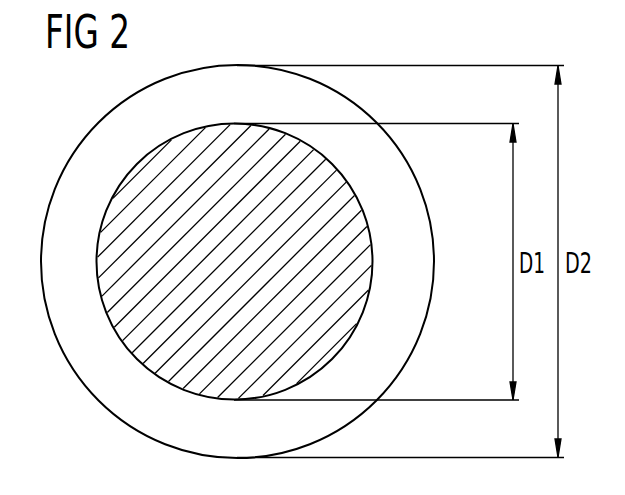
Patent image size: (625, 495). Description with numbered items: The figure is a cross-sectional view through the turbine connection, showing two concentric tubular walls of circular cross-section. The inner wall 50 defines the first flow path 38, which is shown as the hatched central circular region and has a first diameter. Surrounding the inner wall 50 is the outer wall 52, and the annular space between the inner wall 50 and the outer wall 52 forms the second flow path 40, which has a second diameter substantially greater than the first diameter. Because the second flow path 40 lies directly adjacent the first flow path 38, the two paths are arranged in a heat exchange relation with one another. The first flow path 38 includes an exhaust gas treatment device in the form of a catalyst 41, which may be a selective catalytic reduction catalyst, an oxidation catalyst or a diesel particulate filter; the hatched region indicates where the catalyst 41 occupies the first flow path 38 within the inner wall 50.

The first flow path 38 is at (143, 187).
The second flow path 40 is at (413, 210).
The catalyst 41 is at (333, 325).
The inner wall 50 is at (97, 286).
The outer wall 52 is at (115, 422).